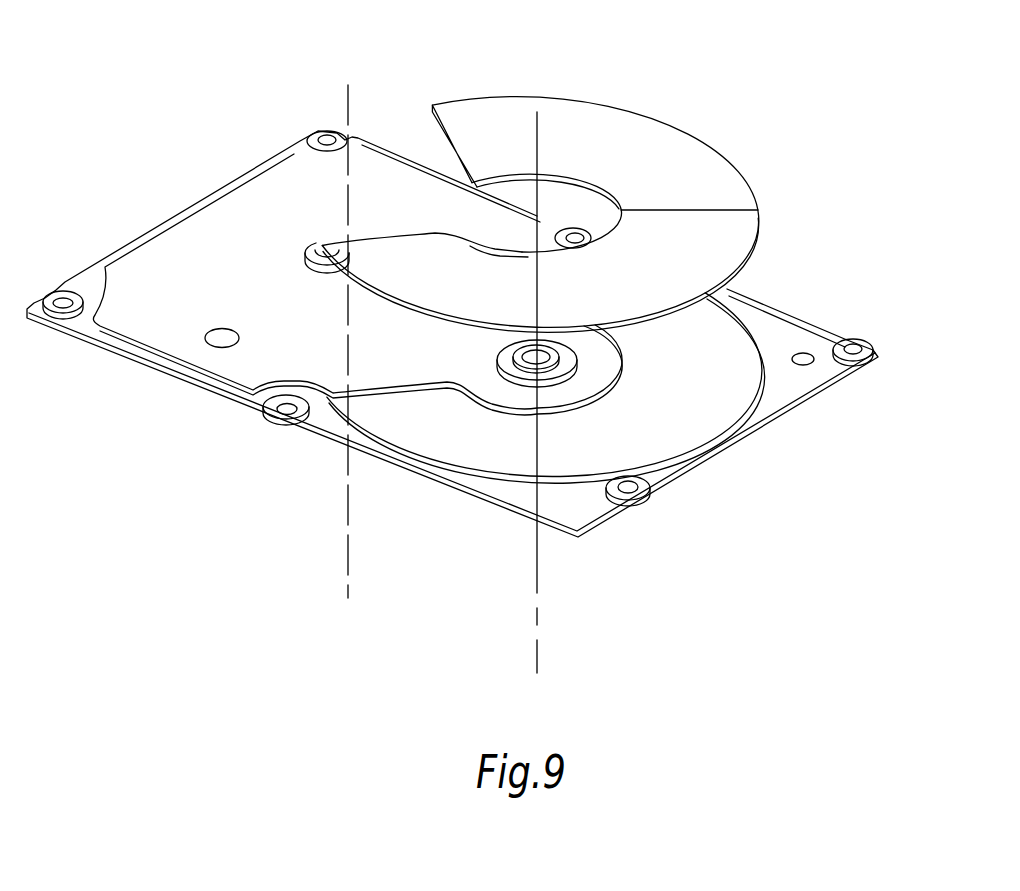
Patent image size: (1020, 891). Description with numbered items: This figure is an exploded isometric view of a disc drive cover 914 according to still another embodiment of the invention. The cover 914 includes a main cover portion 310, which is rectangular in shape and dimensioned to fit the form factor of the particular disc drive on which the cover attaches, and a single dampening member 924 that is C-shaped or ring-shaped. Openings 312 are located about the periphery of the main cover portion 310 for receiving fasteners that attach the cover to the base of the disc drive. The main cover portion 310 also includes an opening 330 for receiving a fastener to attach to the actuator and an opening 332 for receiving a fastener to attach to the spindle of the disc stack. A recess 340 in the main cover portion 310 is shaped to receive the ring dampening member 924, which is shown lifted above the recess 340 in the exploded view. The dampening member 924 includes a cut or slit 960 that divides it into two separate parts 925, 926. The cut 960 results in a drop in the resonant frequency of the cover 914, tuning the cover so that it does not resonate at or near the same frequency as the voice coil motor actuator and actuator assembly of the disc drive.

The cover 914 is at (585, 174).
The dampening member 924 is at (585, 204).
The first part of dampening member 925 is at (718, 243).
The second part of dampening member 926 is at (642, 130).
The cut or slit 960 is at (715, 207).
The main cover portion 310 is at (805, 313).
The openings 312 is at (853, 345).
The opening 330 is at (332, 240).
The opening 332 is at (527, 357).
The recess 340 is at (690, 436).